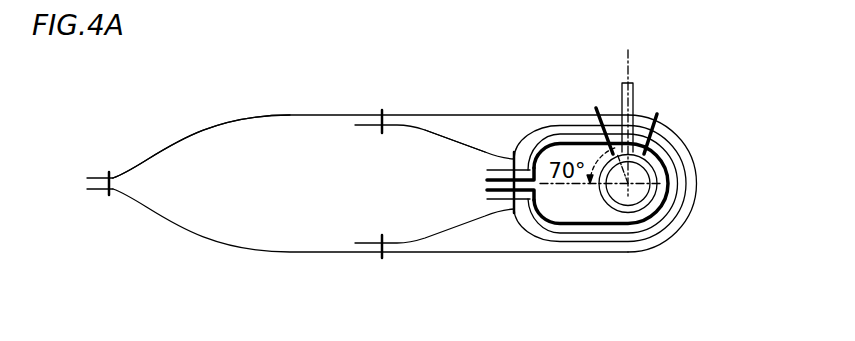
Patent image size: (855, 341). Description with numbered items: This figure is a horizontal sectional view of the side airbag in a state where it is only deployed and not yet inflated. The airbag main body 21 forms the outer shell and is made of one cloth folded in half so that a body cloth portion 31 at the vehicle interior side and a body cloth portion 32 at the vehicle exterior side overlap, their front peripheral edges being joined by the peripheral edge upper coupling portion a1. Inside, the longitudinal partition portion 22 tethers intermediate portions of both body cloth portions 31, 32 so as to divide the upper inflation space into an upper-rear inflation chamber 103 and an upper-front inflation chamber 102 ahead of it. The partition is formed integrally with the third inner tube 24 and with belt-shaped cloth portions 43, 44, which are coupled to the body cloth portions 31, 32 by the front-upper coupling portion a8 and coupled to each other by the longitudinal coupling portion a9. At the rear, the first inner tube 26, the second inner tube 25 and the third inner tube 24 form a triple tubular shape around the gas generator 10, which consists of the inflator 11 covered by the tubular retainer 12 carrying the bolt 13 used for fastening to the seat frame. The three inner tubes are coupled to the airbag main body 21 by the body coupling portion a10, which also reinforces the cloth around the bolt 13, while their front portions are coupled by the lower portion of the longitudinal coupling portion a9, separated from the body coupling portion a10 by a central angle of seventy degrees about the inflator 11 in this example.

The peripheral edge upper coupling portion a1 is at (106, 172).
The airbag main body 21 is at (185, 133).
The body cloth portion 31 is at (247, 117).
The body cloth portion 32 is at (225, 247).
The front-upper coupling portion a8 is at (380, 110).
The longitudinal partition portion 22 is at (418, 128).
The cloth portion 43 is at (450, 139).
The longitudinal coupling portion a9 is at (512, 153).
The cloth portion 44 is at (435, 233).
The upper-rear inflation chamber 103 is at (324, 200).
The upper-front inflation chamber 102 is at (519, 250).
The third inner tube 24 is at (624, 246).
The second inner tube 25 is at (601, 238).
The first inner tube 26 is at (582, 224).
The gas generator 10 is at (693, 205).
The inflator 11 is at (647, 196).
The retainer 12 is at (657, 186).
The bolt 13 is at (628, 80).
The body coupling portion a10 is at (658, 117).